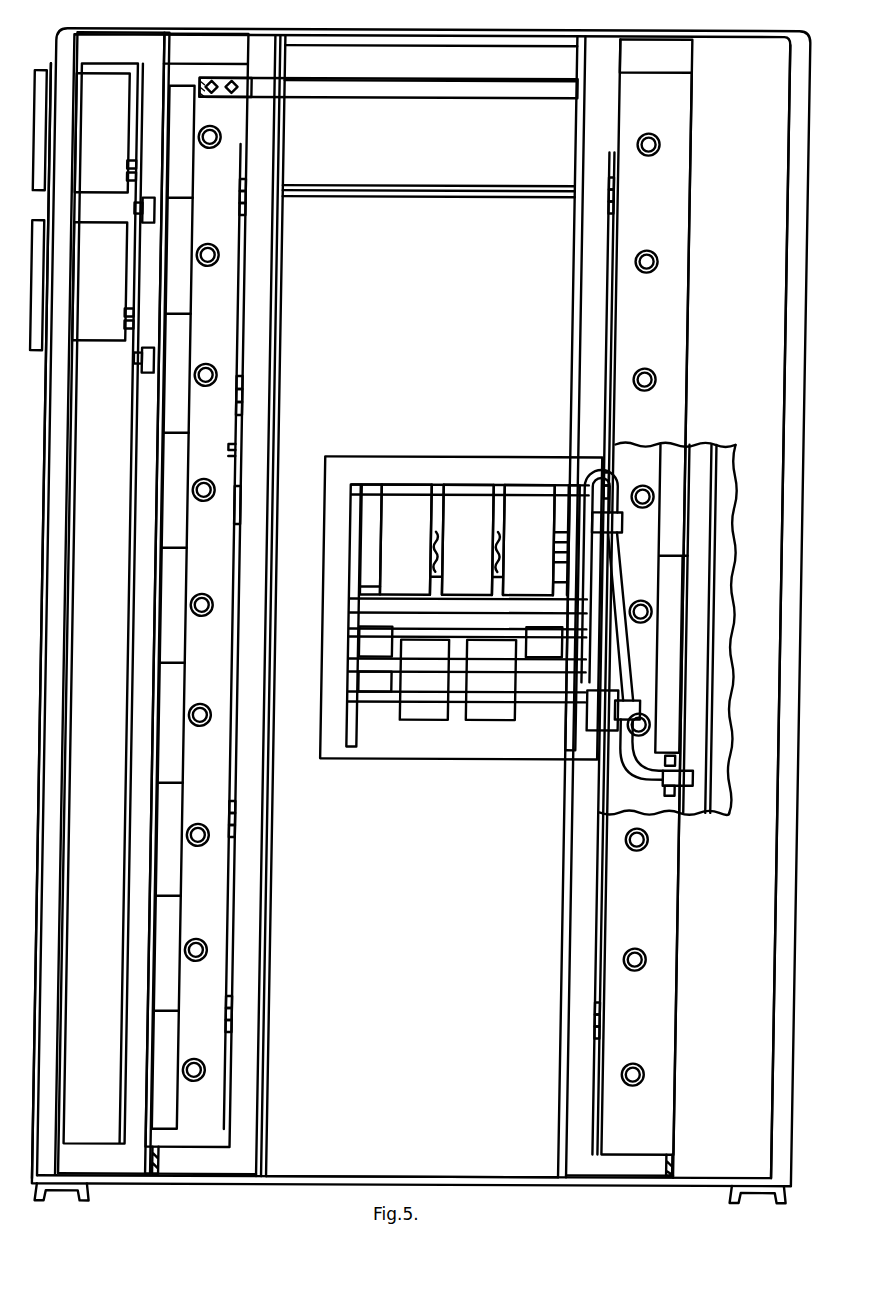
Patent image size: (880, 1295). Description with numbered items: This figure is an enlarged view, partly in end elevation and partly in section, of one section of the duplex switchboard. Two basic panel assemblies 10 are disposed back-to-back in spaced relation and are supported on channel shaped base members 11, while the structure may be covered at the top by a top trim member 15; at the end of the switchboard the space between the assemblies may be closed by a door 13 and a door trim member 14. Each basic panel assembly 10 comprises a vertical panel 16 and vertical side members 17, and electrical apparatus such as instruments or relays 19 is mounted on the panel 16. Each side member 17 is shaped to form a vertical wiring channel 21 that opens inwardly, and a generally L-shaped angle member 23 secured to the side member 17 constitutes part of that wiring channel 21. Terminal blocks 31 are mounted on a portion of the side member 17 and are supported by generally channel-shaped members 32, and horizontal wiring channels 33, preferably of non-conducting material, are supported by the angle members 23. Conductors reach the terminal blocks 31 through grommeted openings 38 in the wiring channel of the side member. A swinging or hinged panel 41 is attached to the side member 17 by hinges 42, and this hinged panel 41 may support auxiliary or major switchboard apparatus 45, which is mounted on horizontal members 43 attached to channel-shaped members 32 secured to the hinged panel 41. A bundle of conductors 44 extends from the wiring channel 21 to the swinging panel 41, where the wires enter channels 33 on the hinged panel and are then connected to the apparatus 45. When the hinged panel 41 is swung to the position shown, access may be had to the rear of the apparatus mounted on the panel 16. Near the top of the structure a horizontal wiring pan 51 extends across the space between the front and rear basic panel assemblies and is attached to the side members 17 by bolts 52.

The basic panel assembly 10 is at (58, 43).
The channel shaped base member 11 is at (100, 1186).
The door 13 is at (543, 1176).
The door trim member 14 is at (291, 60).
The top trim member 15 is at (628, 32).
The vertical panel 16 is at (60, 463).
The vertical side member 17 is at (237, 132).
The instruments or relays 19 is at (110, 130).
The vertical wiring channel 21 is at (708, 743).
The L-shaped angle member 23 is at (129, 72).
The terminal block 31 is at (684, 559).
The channel-shaped member 32 is at (364, 728).
The horizontal wiring channel 33 is at (144, 208).
The grommeted opening 38 is at (214, 832).
The hinged panel 41 is at (245, 305).
The hinge 42 is at (599, 721).
The horizontal member 43 is at (378, 486).
The bundle of conductors 44 is at (630, 608).
The auxiliary or major switchboard apparatus 45 is at (471, 491).
The horizontal wiring pan 51 is at (480, 91).
The bolt 52 is at (226, 86).